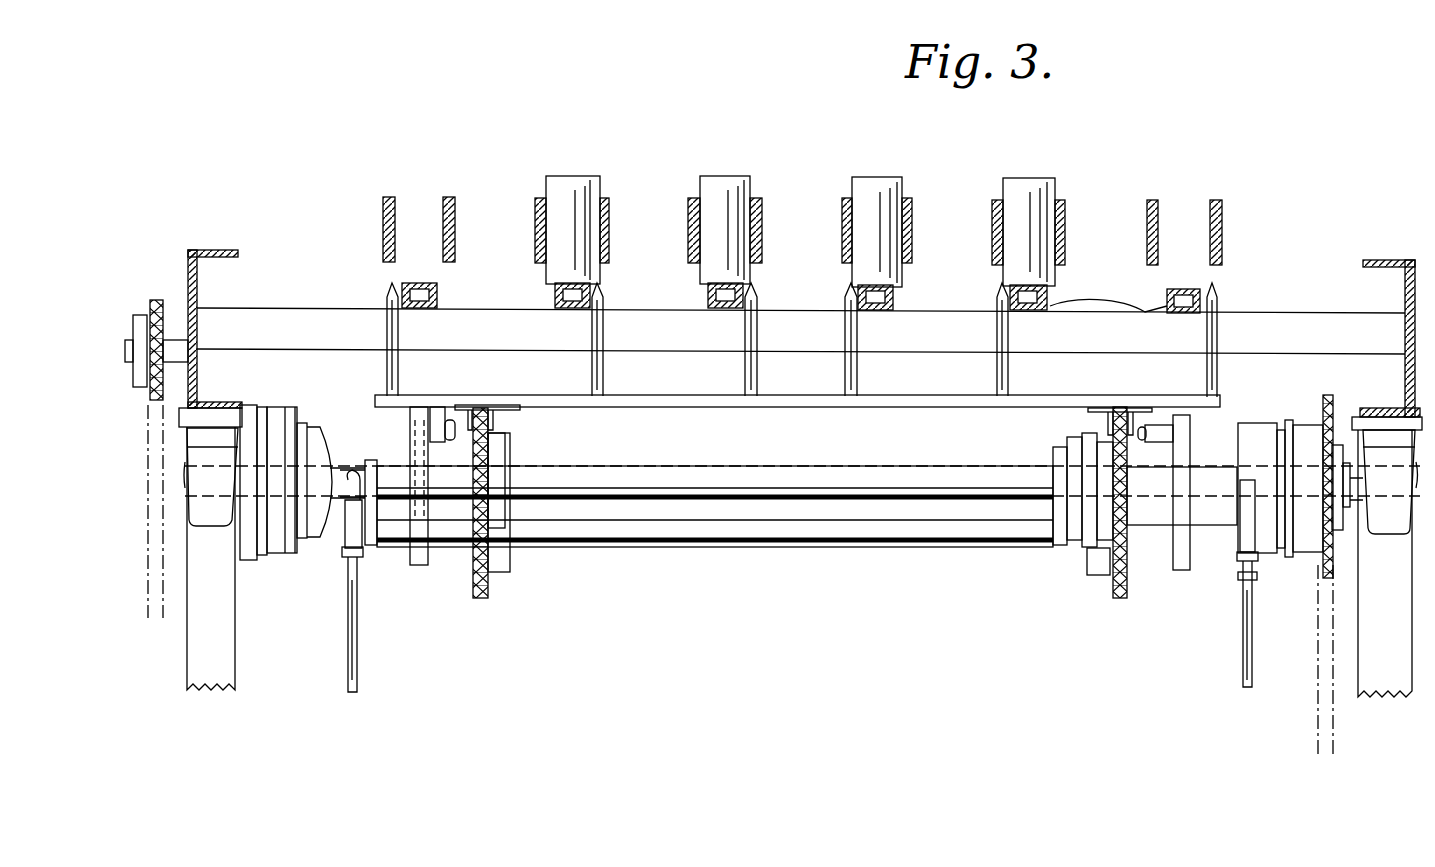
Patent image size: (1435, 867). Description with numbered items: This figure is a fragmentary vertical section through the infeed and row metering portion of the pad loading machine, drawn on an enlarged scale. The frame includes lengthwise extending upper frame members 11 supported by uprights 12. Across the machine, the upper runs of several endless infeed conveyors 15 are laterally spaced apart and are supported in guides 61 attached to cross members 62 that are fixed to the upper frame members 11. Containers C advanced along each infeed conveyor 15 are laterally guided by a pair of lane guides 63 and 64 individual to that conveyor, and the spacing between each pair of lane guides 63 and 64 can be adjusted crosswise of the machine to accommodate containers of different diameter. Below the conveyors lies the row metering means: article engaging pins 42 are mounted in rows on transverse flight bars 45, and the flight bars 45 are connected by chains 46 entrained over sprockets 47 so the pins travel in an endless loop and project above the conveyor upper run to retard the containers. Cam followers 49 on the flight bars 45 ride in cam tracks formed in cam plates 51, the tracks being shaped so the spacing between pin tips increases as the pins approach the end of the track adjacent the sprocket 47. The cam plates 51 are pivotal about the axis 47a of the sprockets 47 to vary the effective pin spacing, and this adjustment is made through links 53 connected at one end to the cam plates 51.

The upper frame member 11 is at (214, 250).
The upright 12 is at (1392, 675).
The container C is at (870, 195).
The infeed conveyor means 15 is at (1022, 294).
The article engaging pin 42 is at (758, 342).
The flight bar 45 is at (714, 402).
The chain 46 is at (1107, 428).
The sprocket 47 is at (503, 588).
The axis of the sprockets 47a is at (748, 468).
The cam follower 49 is at (1203, 430).
The cam plate 51 is at (418, 565).
The link 53 is at (363, 664).
The guide 61 is at (1148, 313).
The cross member 62 is at (1091, 355).
The lane guide 63 is at (610, 227).
The lane guide 64 is at (535, 213).